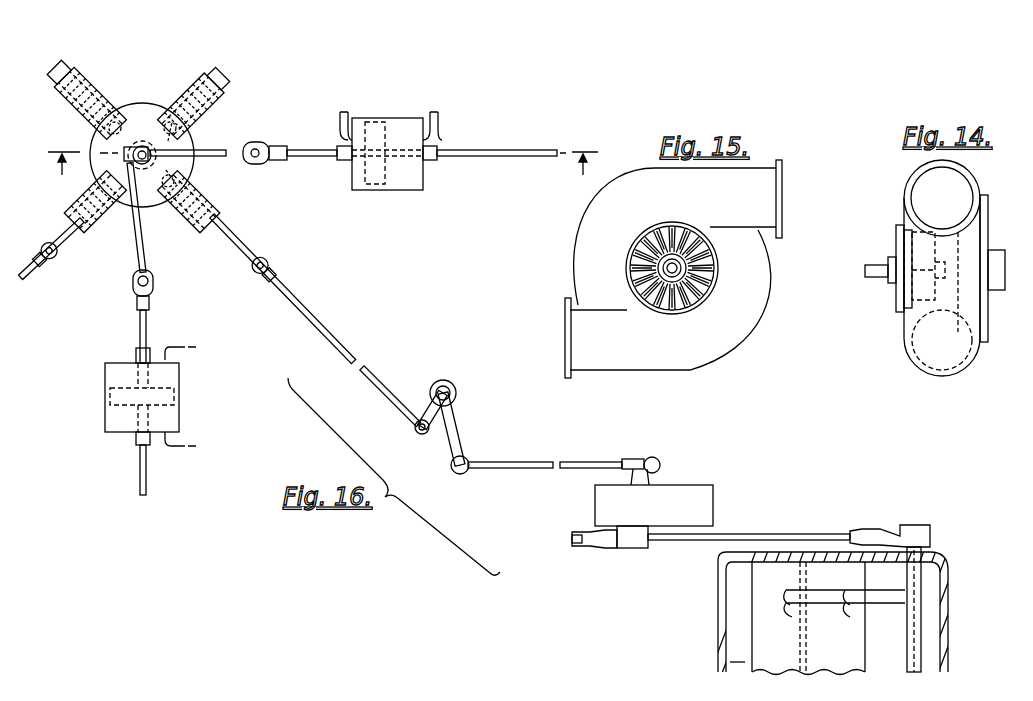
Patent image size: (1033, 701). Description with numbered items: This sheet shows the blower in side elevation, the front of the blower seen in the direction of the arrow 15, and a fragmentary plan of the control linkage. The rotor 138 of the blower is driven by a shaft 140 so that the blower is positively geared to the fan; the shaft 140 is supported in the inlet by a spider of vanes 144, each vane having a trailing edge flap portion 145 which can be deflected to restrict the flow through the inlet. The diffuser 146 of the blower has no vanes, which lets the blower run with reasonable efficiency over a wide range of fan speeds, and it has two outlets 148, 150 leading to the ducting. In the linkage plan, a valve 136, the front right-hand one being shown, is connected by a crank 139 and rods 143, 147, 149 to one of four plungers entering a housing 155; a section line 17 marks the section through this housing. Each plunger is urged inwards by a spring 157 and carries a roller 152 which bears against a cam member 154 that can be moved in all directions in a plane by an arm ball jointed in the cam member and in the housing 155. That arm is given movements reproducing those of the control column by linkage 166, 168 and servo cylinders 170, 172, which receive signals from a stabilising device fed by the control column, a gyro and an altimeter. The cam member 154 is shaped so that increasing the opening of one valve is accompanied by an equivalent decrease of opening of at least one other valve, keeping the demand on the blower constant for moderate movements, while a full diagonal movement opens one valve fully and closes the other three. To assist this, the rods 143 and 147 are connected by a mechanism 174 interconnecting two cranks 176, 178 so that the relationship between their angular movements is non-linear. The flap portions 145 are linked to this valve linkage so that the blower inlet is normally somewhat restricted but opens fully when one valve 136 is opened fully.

In FIG. 15, the arrow 15 is at (860, 270).
In FIG. 16, the section line 17 is at (323, 176).
In FIG. 16, the valve 136 is at (850, 620).
In FIG. 14, the rotor 138 is at (962, 308).
In FIG. 16, the crank 139 is at (886, 532).
In FIG. 15, the shaft 140 is at (690, 298).
In FIG. 14, the shaft 140 is at (877, 262).
In FIG. 16, the rod 143 is at (770, 526).
In FIG. 14, the vane 144 is at (905, 298).
In FIG. 14, the trailing edge flap portion 145 is at (906, 325).
In FIG. 15, the diffuser 146 is at (756, 297).
In FIG. 16, the rod 147 is at (573, 462).
In FIG. 15, the outlet 148 is at (782, 213).
In FIG. 16, the rod 149 is at (374, 377).
In FIG. 15, the outlet 150 is at (565, 330).
In FIG. 16, the roller 152 is at (156, 194).
In FIG. 16, the cam member 154 is at (188, 138).
In FIG. 16, the housing 155 is at (135, 113).
In FIG. 16, the spring 157 is at (204, 196).
In FIG. 16, the linkage 166 is at (500, 143).
In FIG. 16, the linkage 168 is at (140, 477).
In FIG. 16, the servo cylinder 170 is at (381, 126).
In FIG. 16, the servo cylinder 172 is at (105, 374).
In FIG. 16, the mechanism 174 is at (702, 481).
In FIG. 16, the crank 176 is at (625, 460).
In FIG. 16, the crank 178 is at (606, 552).